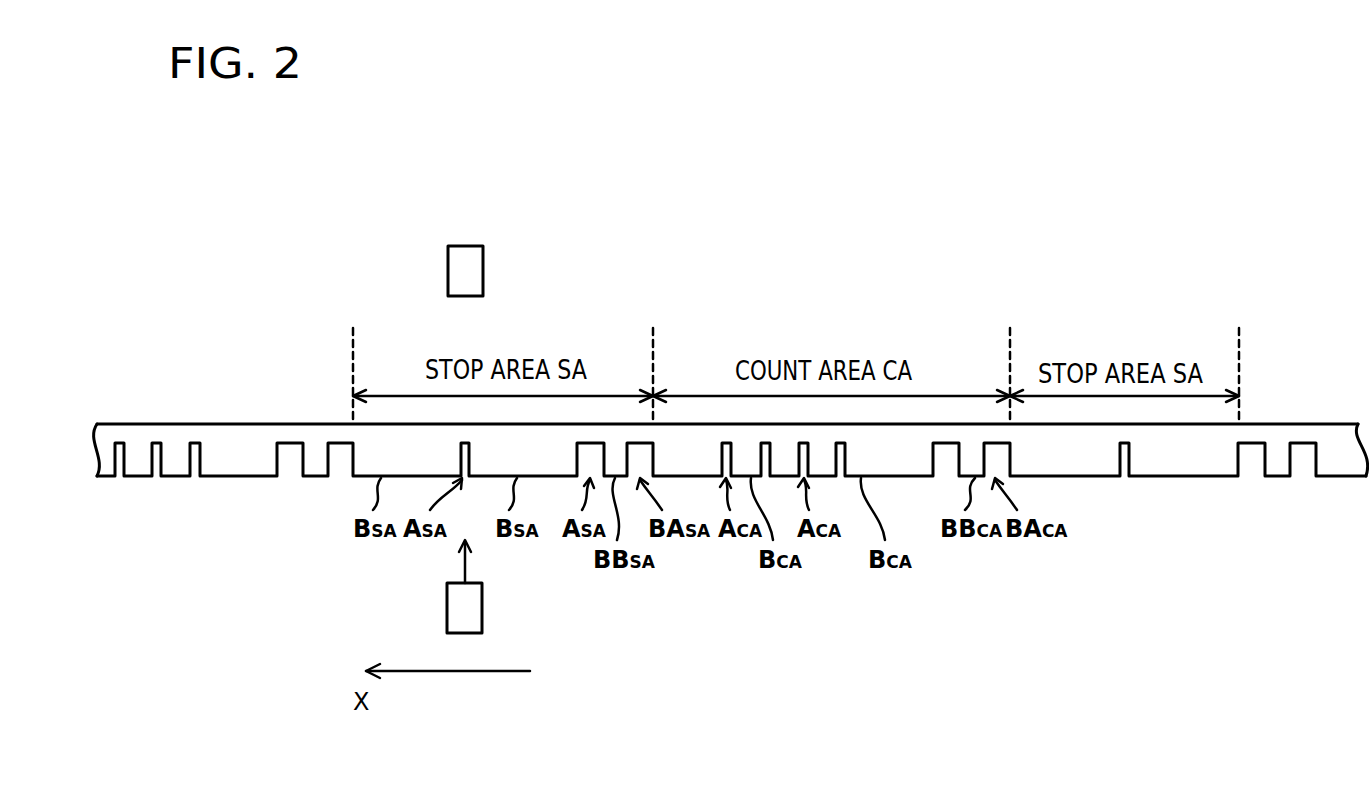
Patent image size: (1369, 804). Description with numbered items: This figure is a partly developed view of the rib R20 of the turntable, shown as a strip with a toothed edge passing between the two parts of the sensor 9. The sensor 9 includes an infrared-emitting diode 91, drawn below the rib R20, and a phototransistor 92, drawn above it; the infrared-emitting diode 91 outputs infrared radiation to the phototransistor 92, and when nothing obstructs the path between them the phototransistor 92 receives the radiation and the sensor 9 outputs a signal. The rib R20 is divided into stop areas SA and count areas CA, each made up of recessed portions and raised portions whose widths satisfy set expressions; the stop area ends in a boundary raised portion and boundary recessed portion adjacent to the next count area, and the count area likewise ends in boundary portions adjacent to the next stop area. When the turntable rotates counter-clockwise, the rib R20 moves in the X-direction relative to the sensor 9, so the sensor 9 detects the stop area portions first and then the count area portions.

The sensor 9 is at (448, 232).
The phototransistor 92 is at (484, 270).
The infrared-emitting diode 91 is at (483, 615).
The rib R20 is at (706, 162).